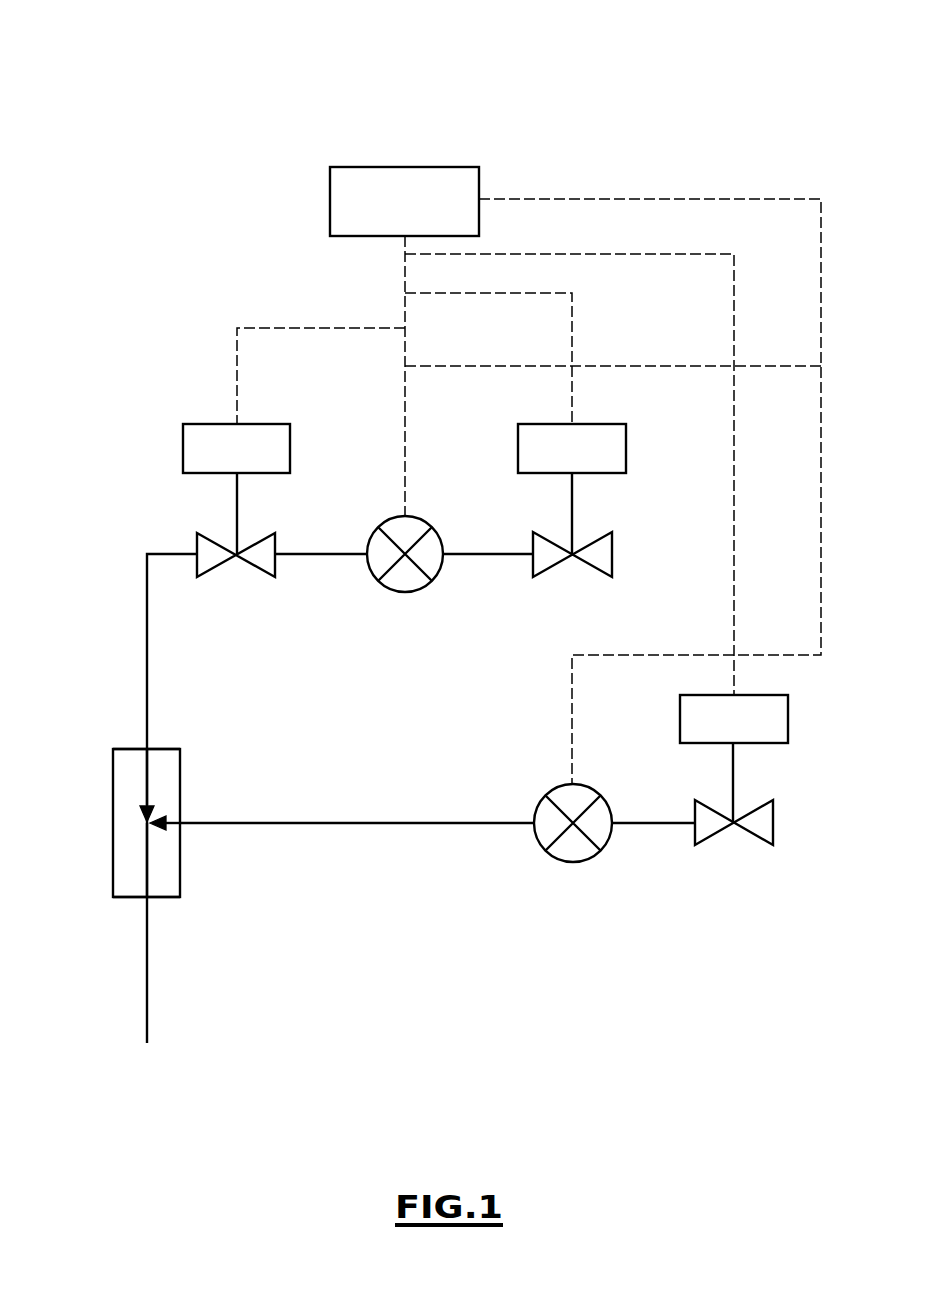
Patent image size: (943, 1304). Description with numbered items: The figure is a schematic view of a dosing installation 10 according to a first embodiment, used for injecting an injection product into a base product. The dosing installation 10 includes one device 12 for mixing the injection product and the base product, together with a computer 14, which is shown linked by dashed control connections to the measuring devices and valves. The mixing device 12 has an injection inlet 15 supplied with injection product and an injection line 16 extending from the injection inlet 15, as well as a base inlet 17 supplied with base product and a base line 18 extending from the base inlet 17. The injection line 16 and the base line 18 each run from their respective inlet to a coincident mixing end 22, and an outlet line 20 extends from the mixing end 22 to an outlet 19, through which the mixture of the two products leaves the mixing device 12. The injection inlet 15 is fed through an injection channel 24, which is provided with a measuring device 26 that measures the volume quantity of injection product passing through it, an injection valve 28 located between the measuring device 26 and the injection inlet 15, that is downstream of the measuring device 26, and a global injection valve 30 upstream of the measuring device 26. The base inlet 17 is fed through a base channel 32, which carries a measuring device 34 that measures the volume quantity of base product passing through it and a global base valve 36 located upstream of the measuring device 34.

The dosing installation 10 is at (94, 100).
The mixing device 12 is at (104, 890).
The computer 14 is at (418, 158).
The injection inlet 15 is at (145, 749).
The injection line 16 is at (145, 773).
The base inlet 17 is at (180, 823).
The base line 18 is at (168, 830).
The outlet 19 is at (145, 897).
The outlet line 20 is at (145, 862).
The mixing end 22 is at (147, 823).
The injection channel 24 is at (166, 538).
The measuring device 26 is at (403, 592).
The injection valve 28 is at (255, 572).
The global injection valve 30 is at (590, 572).
The base channel 32 is at (349, 856).
The measuring device 34 is at (572, 862).
The global base valve 36 is at (748, 840).